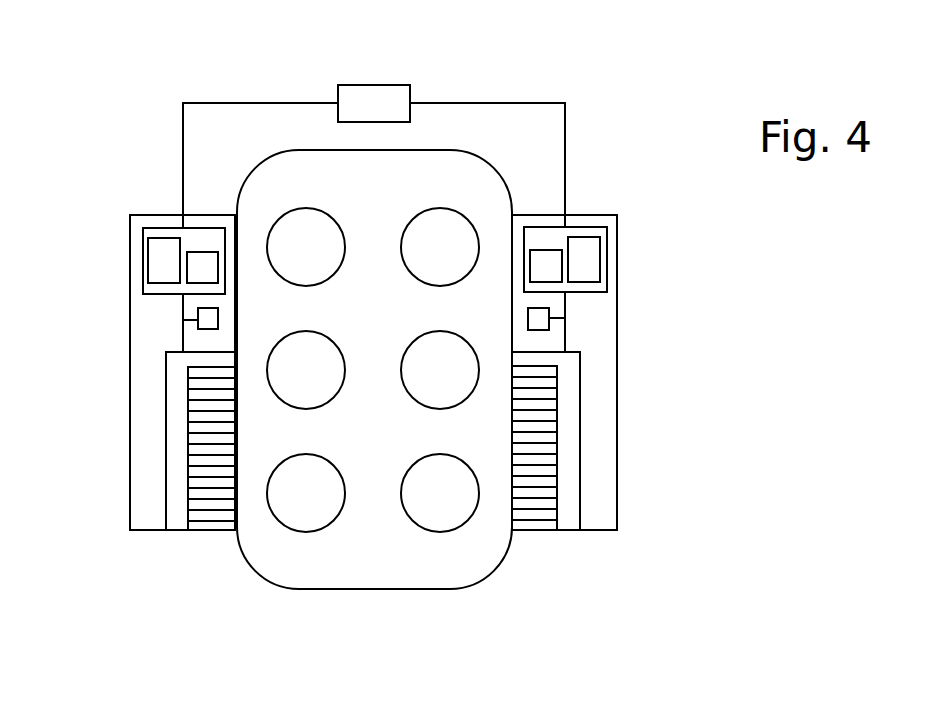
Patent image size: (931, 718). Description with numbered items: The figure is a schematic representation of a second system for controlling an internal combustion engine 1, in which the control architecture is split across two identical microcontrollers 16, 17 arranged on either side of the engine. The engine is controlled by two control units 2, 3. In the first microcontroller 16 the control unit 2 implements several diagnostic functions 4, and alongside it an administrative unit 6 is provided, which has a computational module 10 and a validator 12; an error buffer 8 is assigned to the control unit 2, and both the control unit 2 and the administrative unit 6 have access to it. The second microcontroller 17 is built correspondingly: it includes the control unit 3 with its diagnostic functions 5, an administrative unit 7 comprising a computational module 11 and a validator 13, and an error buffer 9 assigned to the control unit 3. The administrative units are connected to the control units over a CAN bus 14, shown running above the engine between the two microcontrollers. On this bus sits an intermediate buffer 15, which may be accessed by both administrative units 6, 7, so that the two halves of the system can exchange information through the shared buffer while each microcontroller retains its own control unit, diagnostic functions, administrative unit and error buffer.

The internal combustion engine 1 is at (358, 589).
The control unit 2 is at (163, 507).
The control unit 3 is at (580, 512).
The diagnostic functions 4 is at (208, 513).
The diagnostic functions 5 is at (542, 515).
The administrative unit 6 is at (157, 227).
The administrative unit 7 is at (587, 227).
The error buffer 8 is at (197, 315).
The error buffer 9 is at (549, 318).
The computational module 10 is at (150, 257).
The computational module 11 is at (600, 252).
The validator 12 is at (205, 250).
The validator 13 is at (545, 250).
The CAN bus 14 is at (523, 102).
The intermediate buffer 15 is at (374, 103).
The microcontroller 16 is at (130, 460).
The microcontroller 17 is at (615, 415).